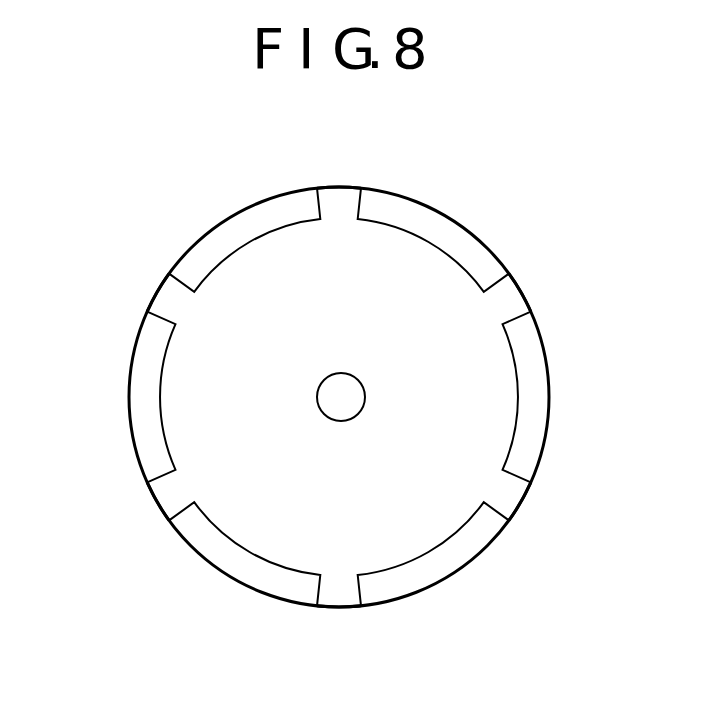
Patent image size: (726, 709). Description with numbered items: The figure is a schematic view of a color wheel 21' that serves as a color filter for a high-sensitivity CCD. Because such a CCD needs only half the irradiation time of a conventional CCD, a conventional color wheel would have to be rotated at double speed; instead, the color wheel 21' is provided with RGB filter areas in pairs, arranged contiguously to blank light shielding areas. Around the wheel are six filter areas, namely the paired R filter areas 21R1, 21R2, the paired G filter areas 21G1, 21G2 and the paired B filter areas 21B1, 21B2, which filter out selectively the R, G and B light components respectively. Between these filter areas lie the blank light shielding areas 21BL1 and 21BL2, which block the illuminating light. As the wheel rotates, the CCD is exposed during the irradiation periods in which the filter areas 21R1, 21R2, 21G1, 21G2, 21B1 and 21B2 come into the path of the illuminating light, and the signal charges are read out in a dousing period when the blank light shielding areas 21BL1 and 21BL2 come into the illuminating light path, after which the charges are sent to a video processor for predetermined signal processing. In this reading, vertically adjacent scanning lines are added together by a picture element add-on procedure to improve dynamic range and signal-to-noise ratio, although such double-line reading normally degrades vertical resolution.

The color wheel 21' is at (382, 397).
The first R filter area 21R1 is at (442, 220).
The second R filter area 21R2 is at (532, 377).
The first G filter area 21G1 is at (437, 577).
The second G filter area 21G2 is at (223, 563).
The first B filter area 21B1 is at (138, 378).
The second B filter area 21B2 is at (238, 220).
The blank light shielding area 21BL1 is at (335, 193).
The blank light shielding area 21BL2 is at (163, 295).